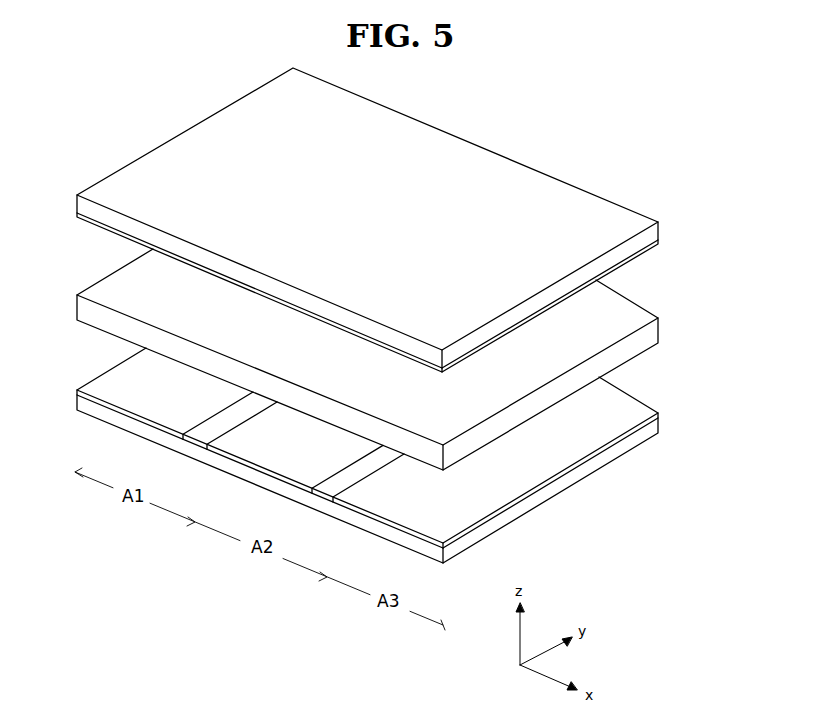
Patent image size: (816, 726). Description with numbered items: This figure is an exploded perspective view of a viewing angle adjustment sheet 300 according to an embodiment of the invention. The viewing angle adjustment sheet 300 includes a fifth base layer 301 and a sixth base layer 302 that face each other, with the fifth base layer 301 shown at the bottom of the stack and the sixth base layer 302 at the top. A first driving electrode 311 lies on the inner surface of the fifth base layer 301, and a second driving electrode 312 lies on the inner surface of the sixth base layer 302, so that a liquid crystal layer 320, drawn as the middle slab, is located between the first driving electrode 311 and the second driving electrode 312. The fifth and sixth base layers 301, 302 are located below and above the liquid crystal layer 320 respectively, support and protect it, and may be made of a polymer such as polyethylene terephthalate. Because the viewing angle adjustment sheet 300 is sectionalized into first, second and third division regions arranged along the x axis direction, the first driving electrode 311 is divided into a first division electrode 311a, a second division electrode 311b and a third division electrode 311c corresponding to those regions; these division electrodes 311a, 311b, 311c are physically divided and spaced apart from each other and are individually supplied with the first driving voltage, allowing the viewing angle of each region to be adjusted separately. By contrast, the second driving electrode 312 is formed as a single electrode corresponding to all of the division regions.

The viewing angle adjustment sheet 300 is at (397, 349).
The fifth base layer 301 is at (517, 507).
The sixth base layer 302 is at (637, 240).
The first driving electrode 311 is at (362, 453).
The first division electrode 311a is at (143, 397).
The second division electrode 311b is at (273, 455).
The third division electrode 311c is at (405, 500).
The second driving electrode 312 is at (630, 263).
The liquid crystal layer 320 is at (622, 355).